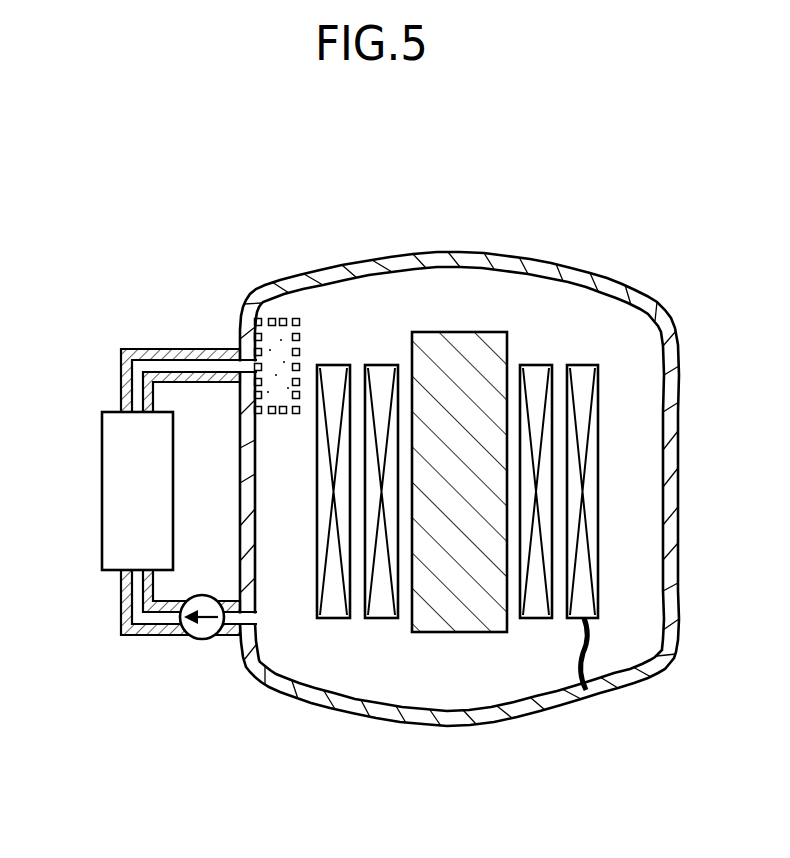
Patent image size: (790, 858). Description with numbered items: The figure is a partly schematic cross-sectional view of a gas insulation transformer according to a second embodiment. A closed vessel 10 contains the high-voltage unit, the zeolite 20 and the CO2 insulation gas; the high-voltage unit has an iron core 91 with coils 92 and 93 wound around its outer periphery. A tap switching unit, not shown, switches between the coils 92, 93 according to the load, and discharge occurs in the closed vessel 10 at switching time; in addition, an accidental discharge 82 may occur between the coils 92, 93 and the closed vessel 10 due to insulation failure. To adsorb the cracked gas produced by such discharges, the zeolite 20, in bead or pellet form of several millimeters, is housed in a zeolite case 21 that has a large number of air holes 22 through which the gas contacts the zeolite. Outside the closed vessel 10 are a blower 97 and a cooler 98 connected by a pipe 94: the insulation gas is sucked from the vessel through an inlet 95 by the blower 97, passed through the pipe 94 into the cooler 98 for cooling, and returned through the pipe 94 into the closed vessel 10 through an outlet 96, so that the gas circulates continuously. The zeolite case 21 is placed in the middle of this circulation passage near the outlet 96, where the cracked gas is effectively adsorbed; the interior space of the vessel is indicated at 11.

The closed vessel 10 is at (520, 716).
The container interior 11 is at (550, 685).
The zeolite 20 is at (308, 326).
The zeolite case 21 is at (302, 322).
The air holes 22 is at (302, 338).
The accidental discharge 82 is at (592, 655).
The iron core 91 is at (460, 606).
The coil 92 is at (388, 600).
The coil 93 is at (340, 600).
The pipe 94 is at (146, 631).
The inlet 95 is at (245, 628).
The outlet 96 is at (246, 362).
The blower 97 is at (200, 630).
The cooler 98 is at (102, 492).